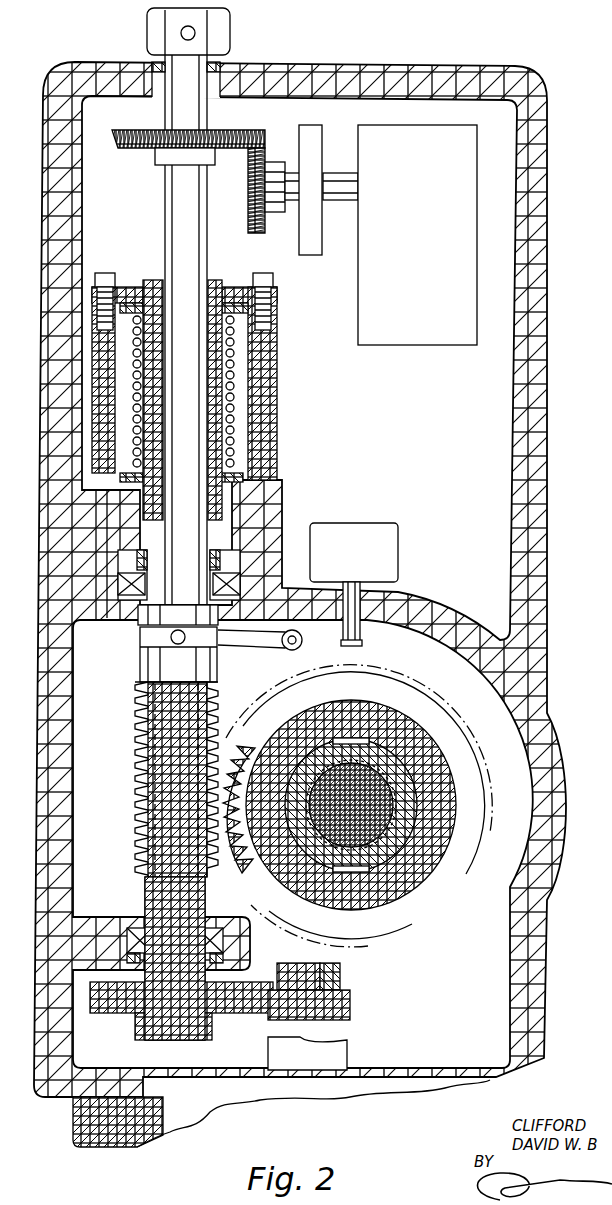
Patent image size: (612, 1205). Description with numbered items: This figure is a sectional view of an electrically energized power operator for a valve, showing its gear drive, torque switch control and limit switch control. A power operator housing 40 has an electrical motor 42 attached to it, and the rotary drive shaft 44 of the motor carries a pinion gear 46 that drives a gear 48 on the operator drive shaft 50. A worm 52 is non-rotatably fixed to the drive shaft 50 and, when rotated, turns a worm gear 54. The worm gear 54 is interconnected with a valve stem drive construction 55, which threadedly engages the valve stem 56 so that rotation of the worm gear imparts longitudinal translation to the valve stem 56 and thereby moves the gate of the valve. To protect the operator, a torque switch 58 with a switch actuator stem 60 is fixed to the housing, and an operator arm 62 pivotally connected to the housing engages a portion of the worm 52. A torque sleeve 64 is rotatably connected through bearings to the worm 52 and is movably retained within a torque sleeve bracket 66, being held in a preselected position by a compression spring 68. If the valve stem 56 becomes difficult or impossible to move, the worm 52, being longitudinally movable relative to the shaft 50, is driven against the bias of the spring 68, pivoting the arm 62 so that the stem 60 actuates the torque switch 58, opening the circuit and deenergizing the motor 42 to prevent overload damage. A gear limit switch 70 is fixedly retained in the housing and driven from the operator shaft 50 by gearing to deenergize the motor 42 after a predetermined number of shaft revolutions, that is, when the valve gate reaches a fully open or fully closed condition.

The power operator housing 40 is at (530, 586).
The electrical motor 42 is at (92, 1110).
The rotary drive shaft 44 is at (347, 1048).
The pinion gear 46 is at (352, 994).
The gear 48 is at (120, 1012).
The operator drive shaft 50 is at (178, 222).
The worm 52 is at (136, 704).
The worm gear 54 is at (388, 915).
The valve stem drive construction 55 is at (414, 870).
The valve stem 56 is at (372, 775).
The torque switch 58 is at (350, 552).
The switch actuator stem 60 is at (352, 604).
The operator arm 62 is at (346, 641).
The torque sleeve 64 is at (216, 468).
The torque sleeve bracket 66 is at (266, 426).
The compression spring 68 is at (236, 358).
The gear limit switch 70 is at (417, 235).